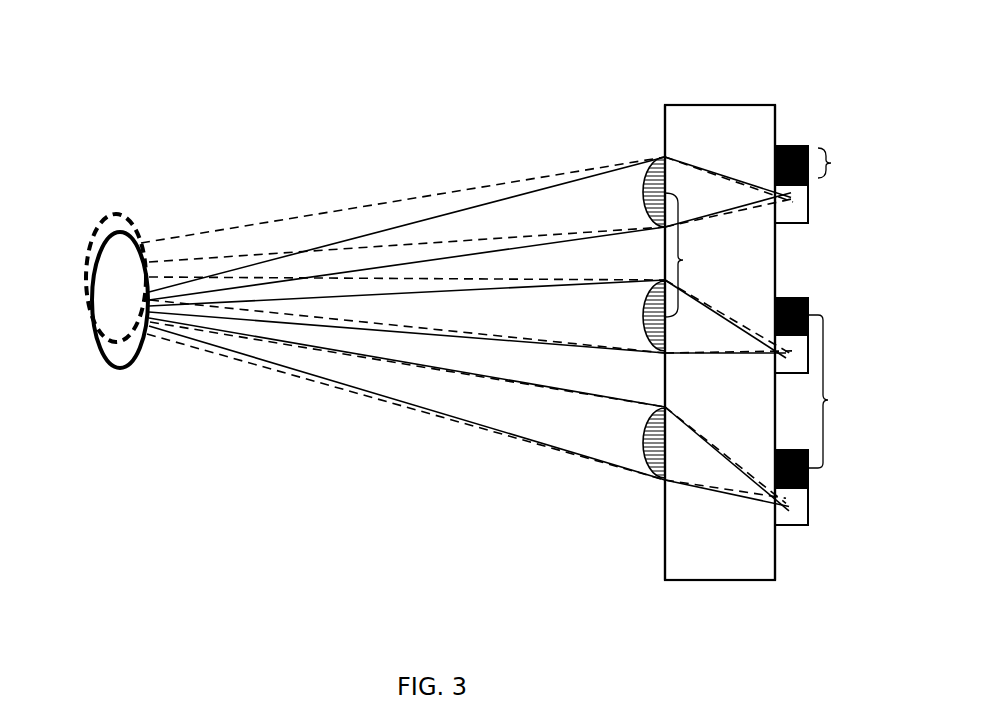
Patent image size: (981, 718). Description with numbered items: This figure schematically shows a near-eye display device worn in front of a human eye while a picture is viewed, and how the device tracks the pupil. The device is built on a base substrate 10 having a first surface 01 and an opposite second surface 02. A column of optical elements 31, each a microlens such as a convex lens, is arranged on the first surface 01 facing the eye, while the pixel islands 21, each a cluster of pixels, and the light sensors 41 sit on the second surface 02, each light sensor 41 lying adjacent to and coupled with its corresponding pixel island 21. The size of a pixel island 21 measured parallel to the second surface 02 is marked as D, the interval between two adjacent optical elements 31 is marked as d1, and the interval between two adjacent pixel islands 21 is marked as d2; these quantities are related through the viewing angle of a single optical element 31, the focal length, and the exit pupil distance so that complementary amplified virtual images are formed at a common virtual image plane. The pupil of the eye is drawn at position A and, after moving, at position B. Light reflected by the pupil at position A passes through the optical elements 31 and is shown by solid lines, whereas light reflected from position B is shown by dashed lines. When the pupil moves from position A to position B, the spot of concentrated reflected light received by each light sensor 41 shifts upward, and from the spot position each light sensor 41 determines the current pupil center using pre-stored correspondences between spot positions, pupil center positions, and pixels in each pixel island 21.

The base substrate 10 is at (712, 138).
The pixel island 21 is at (806, 146).
The light sensor 41 is at (808, 200).
The optical element 31 is at (643, 443).
The first surface 01 is at (665, 557).
The second surface 02 is at (775, 550).
The position A is at (104, 356).
The position B is at (95, 218).
The size of the pixel island D is at (841, 166).
The interval between adjacent optical elements d1 is at (695, 255).
The interval between adjacent pixel islands d2 is at (839, 391).